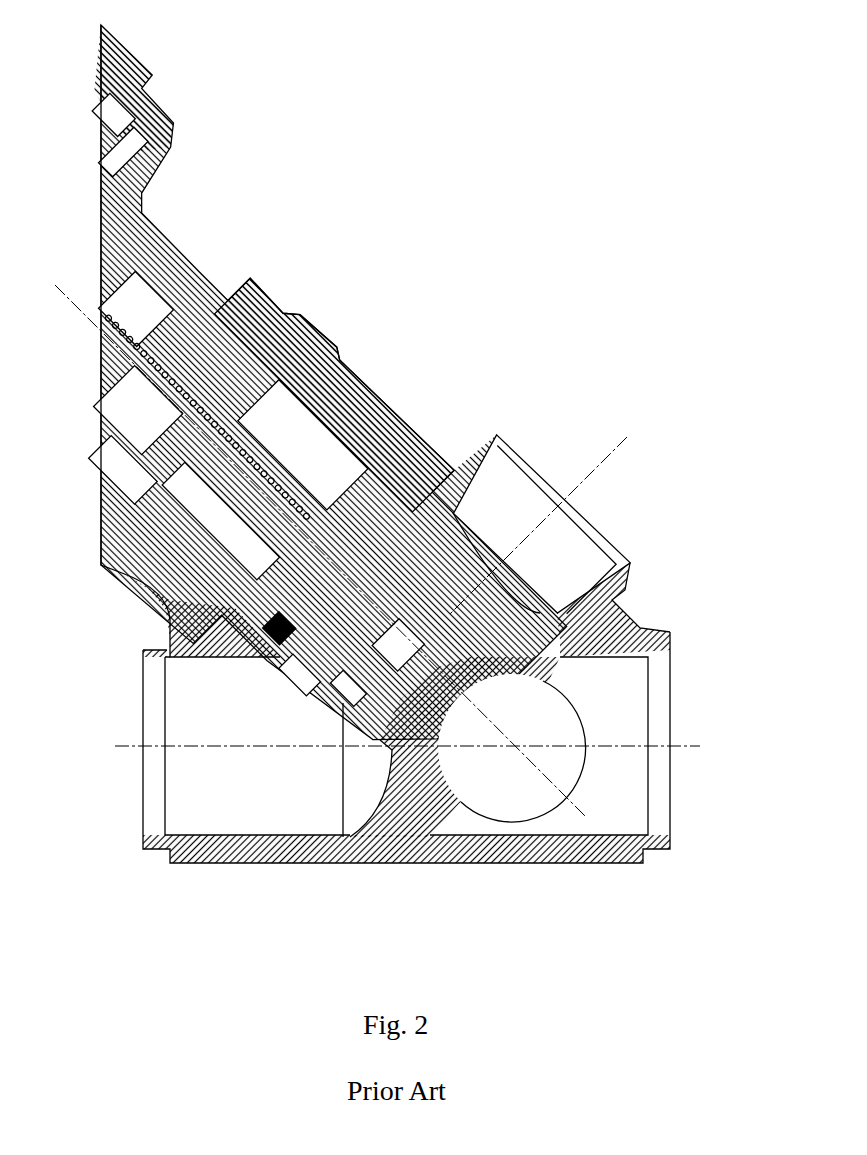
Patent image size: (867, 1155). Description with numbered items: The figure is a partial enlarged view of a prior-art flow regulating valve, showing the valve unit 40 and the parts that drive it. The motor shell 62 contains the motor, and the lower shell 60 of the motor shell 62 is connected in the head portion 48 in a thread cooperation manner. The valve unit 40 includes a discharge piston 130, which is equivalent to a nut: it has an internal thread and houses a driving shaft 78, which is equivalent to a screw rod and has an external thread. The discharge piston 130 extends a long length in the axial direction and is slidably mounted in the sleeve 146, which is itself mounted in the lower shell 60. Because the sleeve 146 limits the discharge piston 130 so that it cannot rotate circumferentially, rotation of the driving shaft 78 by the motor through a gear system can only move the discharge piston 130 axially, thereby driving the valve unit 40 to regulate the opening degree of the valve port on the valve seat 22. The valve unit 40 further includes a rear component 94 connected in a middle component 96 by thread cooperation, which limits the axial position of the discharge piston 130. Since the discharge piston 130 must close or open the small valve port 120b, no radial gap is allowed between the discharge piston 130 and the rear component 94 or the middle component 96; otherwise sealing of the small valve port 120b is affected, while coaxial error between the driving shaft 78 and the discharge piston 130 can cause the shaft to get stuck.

The valve seat 22 is at (383, 860).
The valve unit 40 is at (340, 703).
The head portion 48 is at (282, 312).
The lower shell 60 is at (145, 222).
The motor shell 62 is at (143, 68).
The driving shaft 78 is at (132, 372).
The rear component 94 is at (265, 632).
The middle component 96 is at (280, 673).
The small valve port 120b is at (400, 687).
The discharge piston 130 is at (190, 473).
The sleeve 146 is at (210, 290).